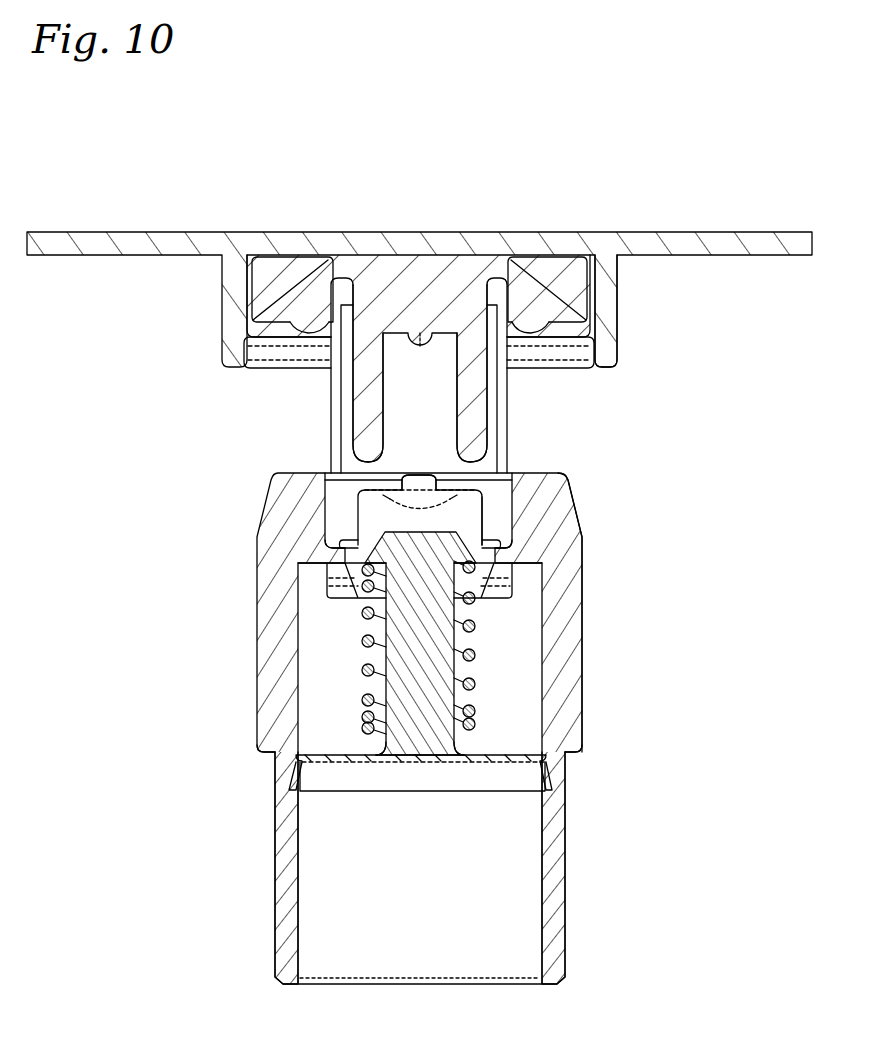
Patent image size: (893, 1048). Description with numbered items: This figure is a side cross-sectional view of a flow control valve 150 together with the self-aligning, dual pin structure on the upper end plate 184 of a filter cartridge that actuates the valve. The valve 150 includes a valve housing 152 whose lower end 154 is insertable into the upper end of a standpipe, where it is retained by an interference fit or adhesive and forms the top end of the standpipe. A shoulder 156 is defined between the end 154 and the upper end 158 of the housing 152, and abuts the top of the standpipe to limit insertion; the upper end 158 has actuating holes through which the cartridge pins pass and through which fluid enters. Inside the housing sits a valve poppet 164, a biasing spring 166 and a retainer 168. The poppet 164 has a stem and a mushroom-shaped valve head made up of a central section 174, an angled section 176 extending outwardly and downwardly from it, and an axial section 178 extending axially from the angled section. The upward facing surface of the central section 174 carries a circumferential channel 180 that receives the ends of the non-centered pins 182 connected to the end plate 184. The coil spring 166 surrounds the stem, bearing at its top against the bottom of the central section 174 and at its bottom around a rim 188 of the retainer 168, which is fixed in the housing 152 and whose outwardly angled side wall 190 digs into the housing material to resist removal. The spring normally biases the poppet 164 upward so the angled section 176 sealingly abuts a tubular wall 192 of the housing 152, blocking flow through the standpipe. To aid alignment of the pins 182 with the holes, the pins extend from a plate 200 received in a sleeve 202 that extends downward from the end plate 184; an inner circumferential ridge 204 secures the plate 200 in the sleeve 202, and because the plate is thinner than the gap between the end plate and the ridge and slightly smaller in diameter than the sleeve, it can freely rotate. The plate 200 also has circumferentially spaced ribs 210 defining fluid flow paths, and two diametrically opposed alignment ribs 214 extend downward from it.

The flow control valve 150 is at (428, 706).
The valve housing 152 is at (252, 672).
The end 154 is at (566, 930).
The shoulder 156 is at (572, 760).
The upper end 158 is at (584, 598).
The valve poppet 164 is at (432, 682).
The biasing spring 166 is at (380, 673).
The retainer 168 is at (342, 792).
The central section 174 is at (472, 556).
The angled section 176 is at (357, 548).
The axial section 178 is at (340, 597).
The circumferential channel 180 is at (358, 492).
The pins 182 is at (355, 402).
The upper end plate 184 is at (672, 232).
The rim 188 is at (462, 738).
The side wall 190 is at (293, 783).
The tubular wall 192 is at (320, 545).
The plate 200 is at (402, 268).
The sleeve 202 is at (620, 290).
The inner circumferential ridge 204 is at (268, 318).
The ribs 210 is at (317, 323).
The alignment ribs 214 is at (506, 372).